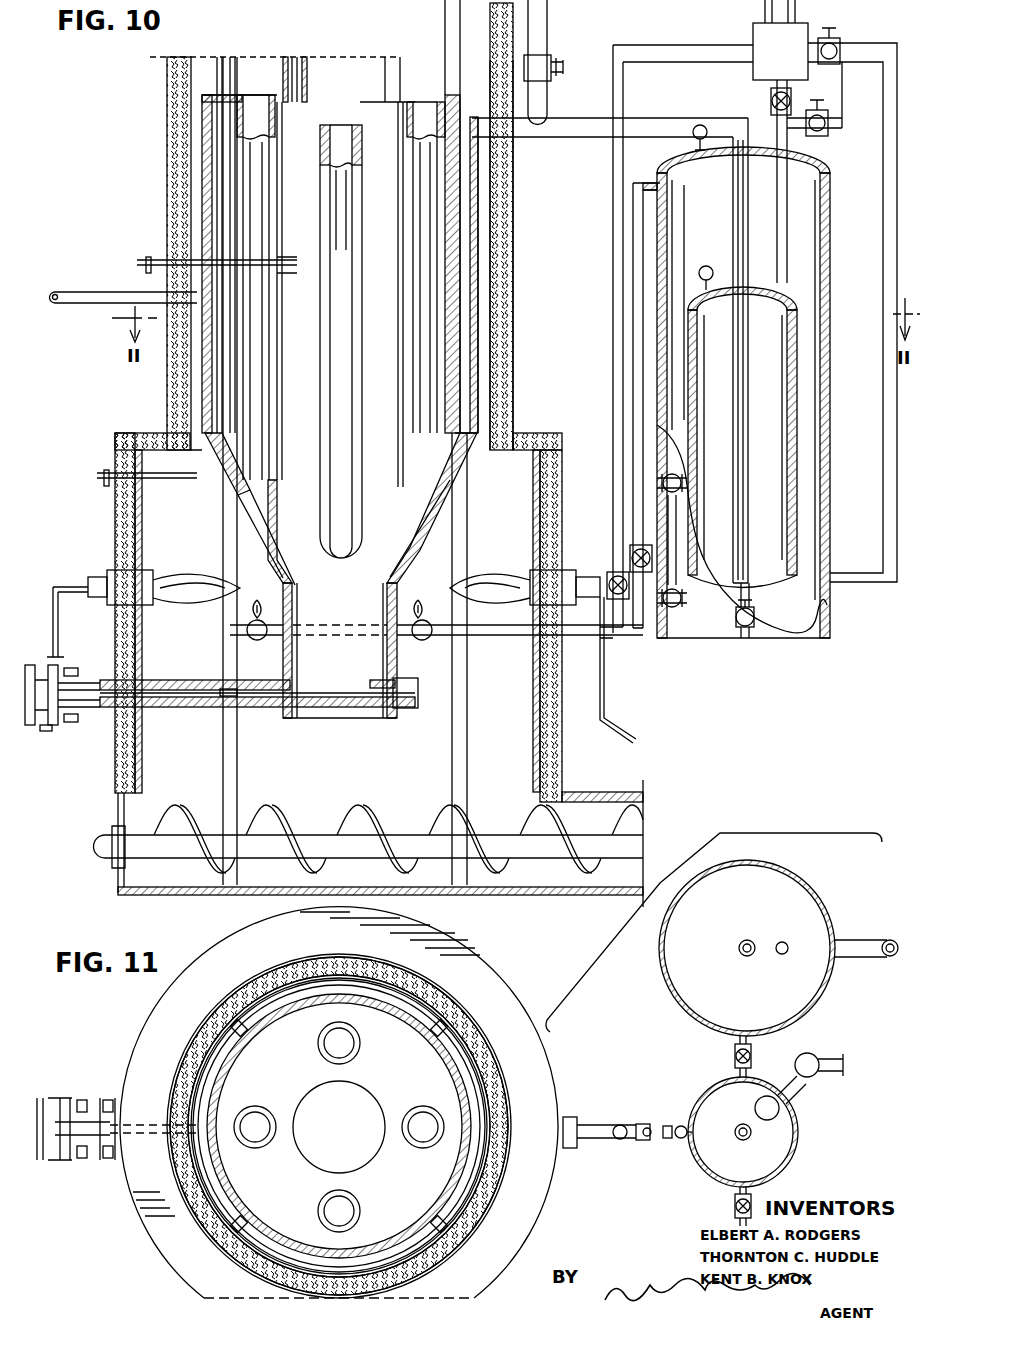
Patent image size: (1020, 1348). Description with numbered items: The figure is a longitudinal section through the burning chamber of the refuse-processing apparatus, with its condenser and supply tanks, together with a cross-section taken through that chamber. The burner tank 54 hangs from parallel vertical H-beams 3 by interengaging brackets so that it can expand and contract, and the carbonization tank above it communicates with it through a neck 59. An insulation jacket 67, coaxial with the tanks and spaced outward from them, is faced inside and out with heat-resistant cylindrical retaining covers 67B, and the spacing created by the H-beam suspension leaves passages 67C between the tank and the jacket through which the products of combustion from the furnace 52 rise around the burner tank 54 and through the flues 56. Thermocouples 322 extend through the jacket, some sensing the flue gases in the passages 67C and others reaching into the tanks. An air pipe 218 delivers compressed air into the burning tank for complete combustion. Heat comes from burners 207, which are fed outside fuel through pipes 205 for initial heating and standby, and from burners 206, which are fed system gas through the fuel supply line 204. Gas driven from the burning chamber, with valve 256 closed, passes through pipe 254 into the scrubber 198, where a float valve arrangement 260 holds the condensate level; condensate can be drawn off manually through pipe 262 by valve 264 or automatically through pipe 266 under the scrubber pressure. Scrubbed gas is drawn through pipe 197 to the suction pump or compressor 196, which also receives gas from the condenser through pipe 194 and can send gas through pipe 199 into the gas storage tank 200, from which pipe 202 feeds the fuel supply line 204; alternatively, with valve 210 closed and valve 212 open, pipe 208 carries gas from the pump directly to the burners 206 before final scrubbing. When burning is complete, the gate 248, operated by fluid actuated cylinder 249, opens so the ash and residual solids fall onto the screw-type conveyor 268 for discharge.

In FIG. 10, the H-beams 3 is at (238, 770).
In FIG. 11, the H-beams 3 is at (445, 1018).
In FIG. 10, the furnace 52 is at (136, 531).
In FIG. 10, the burner tank 54 is at (220, 405).
In FIG. 11, the burner tank 54 is at (240, 1062).
In FIG. 10, the flues 56 is at (332, 456).
In FIG. 11, the flues 56 is at (412, 1106).
In FIG. 10, the neck 59 is at (292, 95).
In FIG. 10, the insulation jacket 67 is at (178, 196).
In FIG. 11, the insulation jacket 67 is at (455, 1008).
In FIG. 10, the cylindrical retaining covers 67B is at (515, 318).
In FIG. 11, the cylindrical retaining covers 67B is at (455, 1235).
In FIG. 10, the passages 67C is at (515, 330).
In FIG. 11, the passages 67C is at (415, 1245).
In FIG. 10, the pipe 194 is at (800, 14).
In FIG. 10, the suction pump or compressor 196 is at (755, 30).
In FIG. 10, the pipe 197 is at (778, 228).
In FIG. 10, the scrubber 198 is at (785, 447).
In FIG. 11, the scrubber 198 is at (780, 1135).
In FIG. 10, the pipe 199 is at (883, 162).
In FIG. 11, the pipe 199 is at (888, 958).
In FIG. 10, the gas storage tank 200 is at (810, 276).
In FIG. 11, the gas storage tank 200 is at (810, 915).
In FIG. 10, the pipe 202 is at (640, 258).
In FIG. 11, the pipe 202 is at (648, 1124).
In FIG. 10, the fuel supply line 204 is at (478, 637).
In FIG. 11, the fuel supply line 204 is at (597, 1139).
In FIG. 10, the pipes 205 is at (58, 624).
In FIG. 10, the burners 206 is at (426, 641).
In FIG. 10, the burners 207 is at (158, 580).
In FIG. 11, the burners 207 is at (572, 1117).
In FIG. 10, the pipe 208 is at (613, 372).
In FIG. 11, the pipe 208 is at (618, 1125).
In FIG. 10, the valve 210 is at (633, 553).
In FIG. 10, the valve 212 is at (612, 578).
In FIG. 10, the air pipe 218 is at (92, 293).
In FIG. 10, the gate 248 is at (422, 708).
In FIG. 11, the gate 248 is at (333, 1162).
In FIG. 10, the fluid actuated cylinder 249 is at (56, 737).
In FIG. 11, the fluid actuated cylinder 249 is at (58, 1172).
In FIG. 10, the pipe 254 is at (528, 130).
In FIG. 10, the valve 256 is at (548, 78).
In FIG. 11, the float valve arrangement 260 is at (780, 1110).
In FIG. 10, the pipe 262 is at (756, 622).
In FIG. 10, the valve 264 is at (745, 627).
In FIG. 11, the pipe 266 is at (820, 1066).
In FIG. 10, the conveyor 268 is at (507, 865).
In FIG. 10, the thermocouples 322 is at (150, 262).